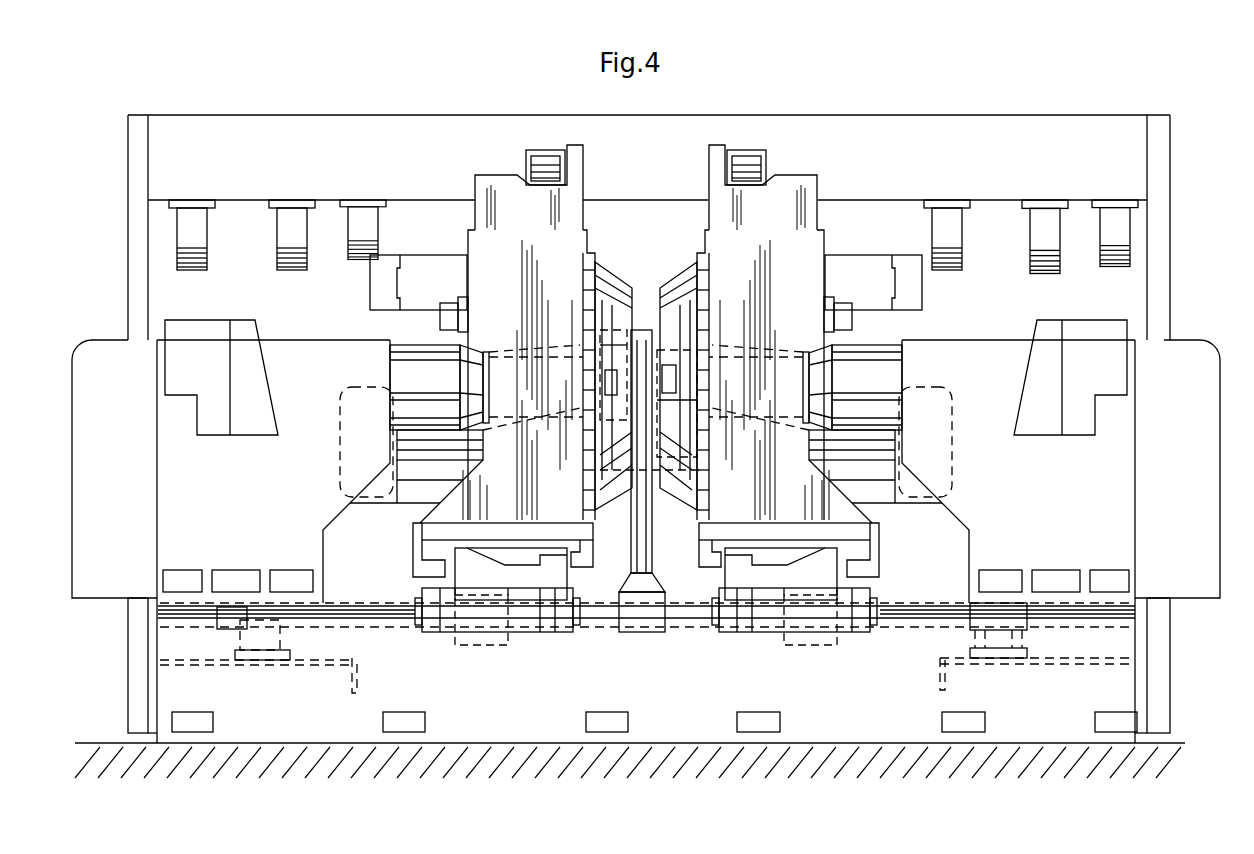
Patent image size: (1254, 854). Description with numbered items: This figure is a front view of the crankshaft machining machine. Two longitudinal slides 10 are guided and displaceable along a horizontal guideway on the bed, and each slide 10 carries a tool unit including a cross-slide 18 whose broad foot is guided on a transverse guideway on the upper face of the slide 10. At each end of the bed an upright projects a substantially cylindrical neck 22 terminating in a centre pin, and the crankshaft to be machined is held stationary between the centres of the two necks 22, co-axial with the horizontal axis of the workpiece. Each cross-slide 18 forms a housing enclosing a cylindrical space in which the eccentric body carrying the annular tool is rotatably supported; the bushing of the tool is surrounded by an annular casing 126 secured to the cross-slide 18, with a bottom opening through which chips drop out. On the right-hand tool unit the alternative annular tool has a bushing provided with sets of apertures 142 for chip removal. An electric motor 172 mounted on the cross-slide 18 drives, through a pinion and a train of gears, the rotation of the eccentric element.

The longitudinal slide 10 is at (530, 590).
The cross-slide 18 is at (549, 489).
The cylindrical neck 22 is at (425, 358).
The annular casing 126 is at (668, 290).
The set of apertures 142 is at (747, 160).
The electric motor 172 is at (545, 160).